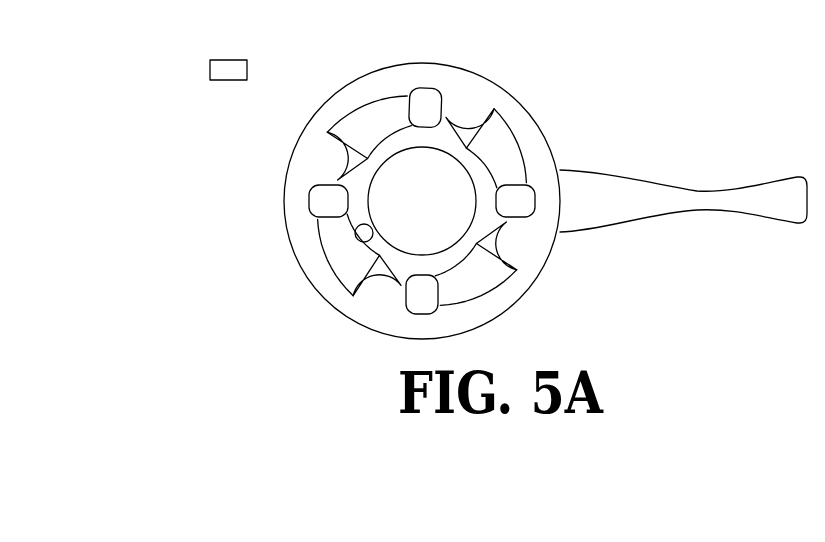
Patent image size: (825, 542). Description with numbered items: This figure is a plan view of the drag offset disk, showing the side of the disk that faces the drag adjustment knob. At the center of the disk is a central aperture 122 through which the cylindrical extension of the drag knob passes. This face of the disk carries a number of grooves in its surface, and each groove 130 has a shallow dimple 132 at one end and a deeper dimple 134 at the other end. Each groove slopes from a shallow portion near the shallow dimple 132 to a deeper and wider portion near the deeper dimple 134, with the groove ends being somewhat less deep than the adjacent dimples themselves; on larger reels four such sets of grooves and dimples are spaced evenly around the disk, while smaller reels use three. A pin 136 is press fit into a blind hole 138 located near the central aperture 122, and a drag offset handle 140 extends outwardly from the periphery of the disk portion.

The central aperture 122 is at (445, 209).
The groove 130 is at (512, 113).
The shallow dimple 132 is at (517, 201).
The deeper dimple 134 is at (462, 117).
The pin 136 is at (227, 60).
The blind hole 138 is at (357, 233).
The drag offset handle 140 is at (700, 190).